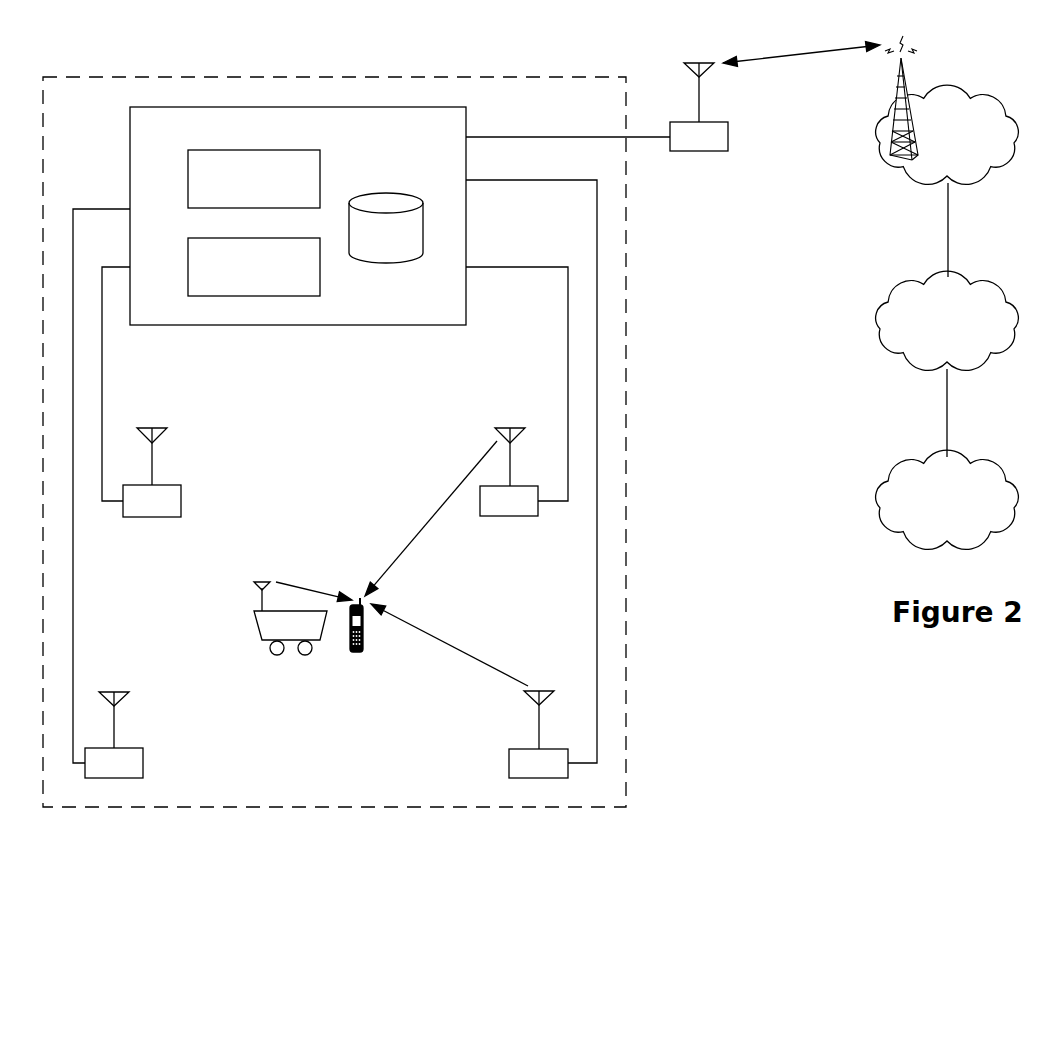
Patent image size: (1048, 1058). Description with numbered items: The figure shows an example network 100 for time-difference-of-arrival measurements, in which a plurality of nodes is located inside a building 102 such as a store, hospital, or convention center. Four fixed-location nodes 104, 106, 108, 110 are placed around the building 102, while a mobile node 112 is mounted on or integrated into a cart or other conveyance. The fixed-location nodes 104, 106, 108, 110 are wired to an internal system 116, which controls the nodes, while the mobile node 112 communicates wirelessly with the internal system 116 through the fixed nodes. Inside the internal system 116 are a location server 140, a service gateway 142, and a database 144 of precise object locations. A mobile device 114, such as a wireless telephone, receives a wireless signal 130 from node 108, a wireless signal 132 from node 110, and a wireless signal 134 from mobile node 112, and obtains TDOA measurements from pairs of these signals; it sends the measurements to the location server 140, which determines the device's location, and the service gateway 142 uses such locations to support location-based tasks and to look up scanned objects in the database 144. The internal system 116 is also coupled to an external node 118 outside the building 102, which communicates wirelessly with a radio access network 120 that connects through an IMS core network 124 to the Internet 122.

The network 100 is at (876, 762).
The building 102 is at (628, 778).
The node 104 is at (152, 518).
The node 106 is at (143, 764).
The node 108 is at (510, 517).
The node 110 is at (509, 763).
The mobile node 112 is at (253, 622).
The mobile device 114 is at (364, 633).
The internal system 116 is at (298, 216).
The external node 118 is at (699, 152).
The radio access network 120 is at (976, 85).
The Internet 122 is at (973, 455).
The IMS core network 124 is at (973, 273).
The wireless signal 130 is at (431, 513).
The wireless signal 132 is at (465, 650).
The wireless signal 134 is at (305, 584).
The location server 140 is at (188, 178).
The service gateway 142 is at (188, 266).
The database 144 is at (385, 193).